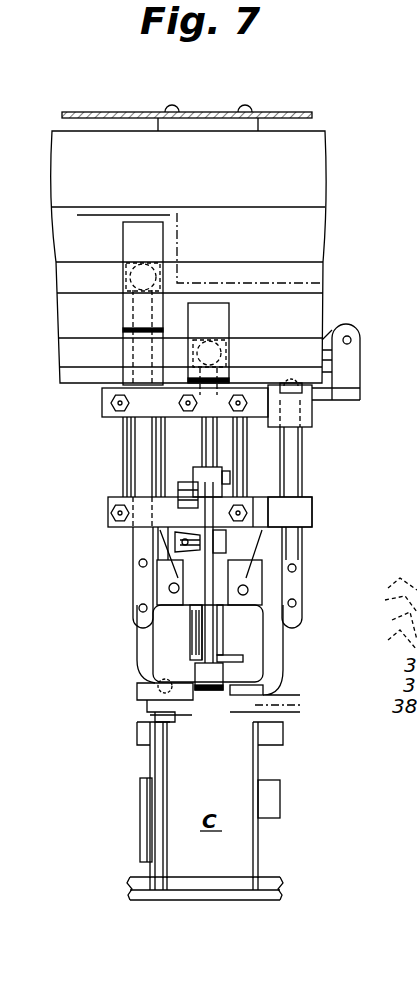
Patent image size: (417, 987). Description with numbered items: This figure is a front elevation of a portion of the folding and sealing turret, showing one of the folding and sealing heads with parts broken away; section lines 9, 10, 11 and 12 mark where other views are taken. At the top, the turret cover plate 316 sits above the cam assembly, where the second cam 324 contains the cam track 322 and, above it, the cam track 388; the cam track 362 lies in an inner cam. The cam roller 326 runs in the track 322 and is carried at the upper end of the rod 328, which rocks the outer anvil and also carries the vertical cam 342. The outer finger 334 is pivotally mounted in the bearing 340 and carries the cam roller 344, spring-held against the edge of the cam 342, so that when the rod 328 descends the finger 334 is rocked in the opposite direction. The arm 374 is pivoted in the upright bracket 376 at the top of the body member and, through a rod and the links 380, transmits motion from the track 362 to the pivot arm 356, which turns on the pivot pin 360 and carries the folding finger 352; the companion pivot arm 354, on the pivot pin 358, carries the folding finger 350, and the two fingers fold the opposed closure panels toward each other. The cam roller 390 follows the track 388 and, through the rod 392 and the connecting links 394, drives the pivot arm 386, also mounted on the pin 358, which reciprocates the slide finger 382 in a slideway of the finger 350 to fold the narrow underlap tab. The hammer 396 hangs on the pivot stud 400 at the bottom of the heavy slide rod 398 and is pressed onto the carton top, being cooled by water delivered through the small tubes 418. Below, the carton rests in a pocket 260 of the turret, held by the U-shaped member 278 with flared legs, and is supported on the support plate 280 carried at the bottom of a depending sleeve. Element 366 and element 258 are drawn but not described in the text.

The turret cover plate 316 is at (62, 115).
The cam track 388 is at (238, 278).
The cam roller 390 is at (122, 279).
The second cam 324 is at (65, 312).
The cam track 322 is at (82, 357).
The cam roller 326 is at (222, 345).
The arm 374 is at (330, 335).
The upright bracket 376 is at (355, 350).
The cam track 362 is at (416, 362).
The bracket portion 366 is at (402, 412).
The rod 328 is at (210, 432).
The vertical cam 342 is at (205, 472).
The bearing 340 is at (180, 488).
The cam roller 344 is at (230, 543).
The rod 392 is at (172, 543).
The pivot pin 358 is at (172, 589).
The pivot pin 360 is at (262, 592).
The links 380 is at (302, 596).
The connecting links 394 is at (137, 592).
The pivot arm 354 is at (140, 623).
The pivot arm 356 is at (275, 643).
The pivot arm 386 is at (142, 640).
The slide rod 398 is at (181, 632).
The pivot stud 400 is at (205, 650).
The outer finger 334 is at (237, 630).
The small tubes 418 is at (214, 642).
The slide finger 382 is at (128, 692).
The hammer 396 is at (182, 712).
The folding finger 352 is at (292, 702).
The folding finger 350 is at (200, 734).
The pockets 260 is at (256, 856).
The U-shaped members 278 is at (270, 801).
The base plate 258 is at (193, 898).
The support plate 280 is at (128, 895).
The section line 9- 9 is at (90, 240).
The section line 10- 10 is at (90, 566).
The section line 11- 11 is at (96, 696).
The section line 12- 12 is at (117, 706).